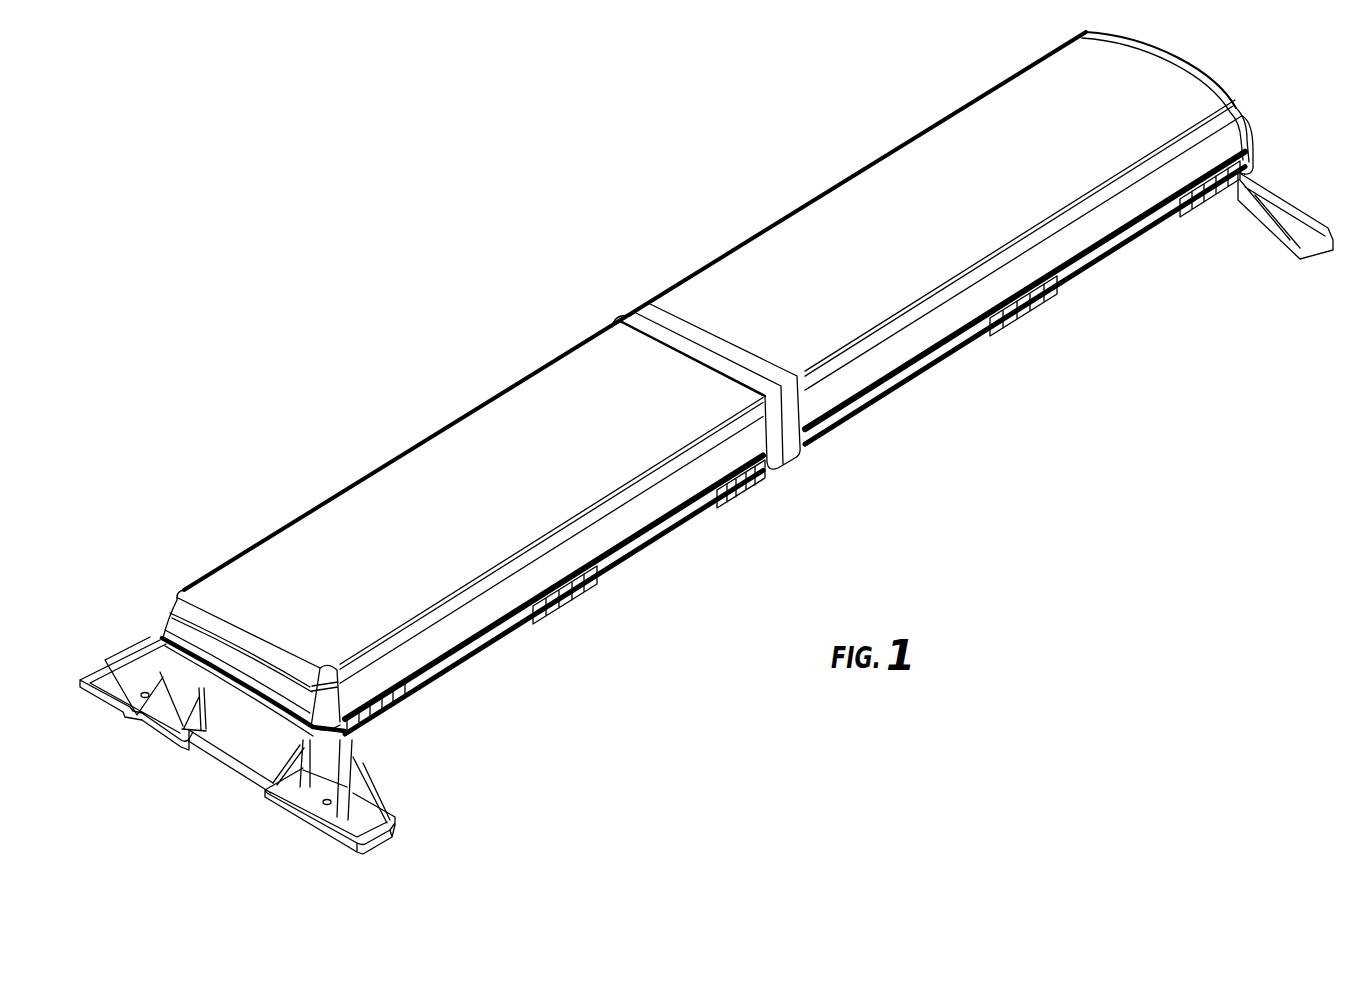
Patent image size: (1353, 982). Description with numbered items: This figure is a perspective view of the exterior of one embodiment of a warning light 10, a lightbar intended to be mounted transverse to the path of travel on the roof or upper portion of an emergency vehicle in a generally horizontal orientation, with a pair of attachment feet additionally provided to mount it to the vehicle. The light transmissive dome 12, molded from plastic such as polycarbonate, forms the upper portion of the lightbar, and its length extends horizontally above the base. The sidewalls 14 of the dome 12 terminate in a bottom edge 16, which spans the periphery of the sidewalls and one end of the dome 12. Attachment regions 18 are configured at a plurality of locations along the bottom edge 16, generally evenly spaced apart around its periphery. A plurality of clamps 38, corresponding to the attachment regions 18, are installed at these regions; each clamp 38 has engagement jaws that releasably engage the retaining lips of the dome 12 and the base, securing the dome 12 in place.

The warning light 10 is at (428, 377).
The light transmissive dome 12 is at (840, 204).
The sidewalls 14 is at (1188, 163).
The bottom edge 16 is at (940, 363).
The attachment regions 18 is at (393, 713).
The clamps 38 is at (357, 732).